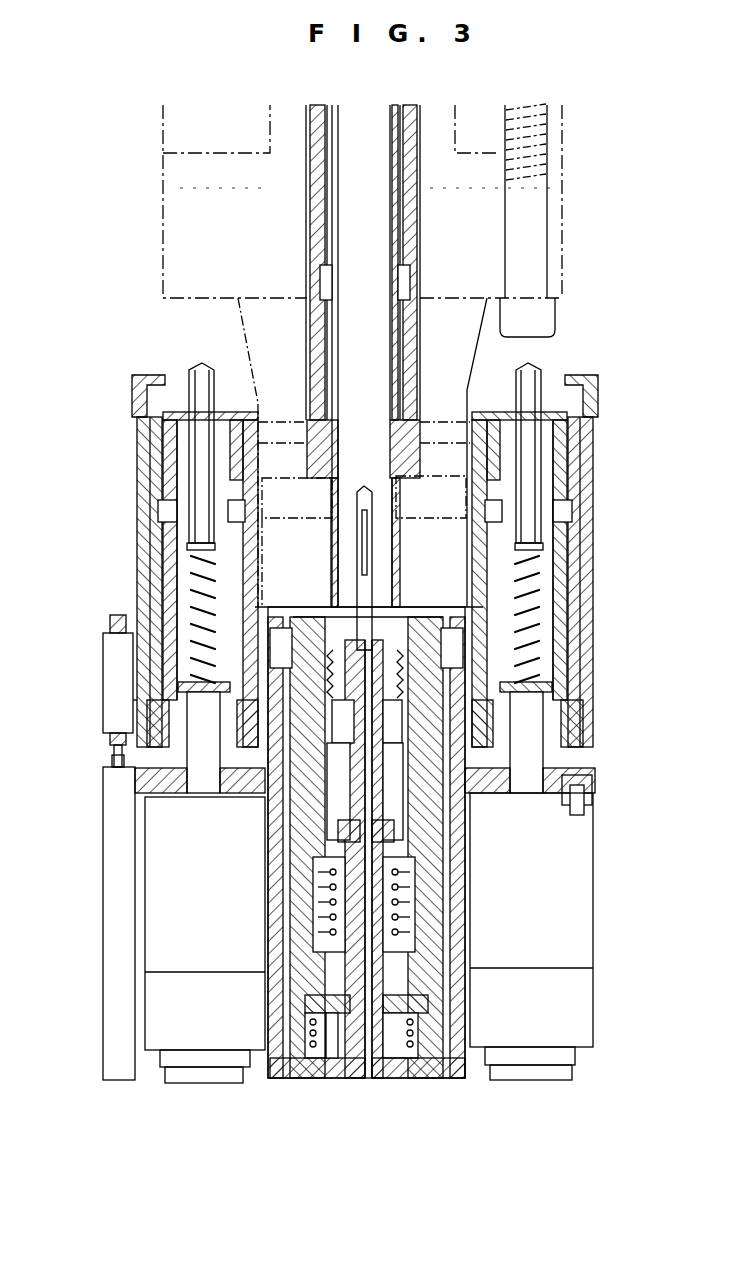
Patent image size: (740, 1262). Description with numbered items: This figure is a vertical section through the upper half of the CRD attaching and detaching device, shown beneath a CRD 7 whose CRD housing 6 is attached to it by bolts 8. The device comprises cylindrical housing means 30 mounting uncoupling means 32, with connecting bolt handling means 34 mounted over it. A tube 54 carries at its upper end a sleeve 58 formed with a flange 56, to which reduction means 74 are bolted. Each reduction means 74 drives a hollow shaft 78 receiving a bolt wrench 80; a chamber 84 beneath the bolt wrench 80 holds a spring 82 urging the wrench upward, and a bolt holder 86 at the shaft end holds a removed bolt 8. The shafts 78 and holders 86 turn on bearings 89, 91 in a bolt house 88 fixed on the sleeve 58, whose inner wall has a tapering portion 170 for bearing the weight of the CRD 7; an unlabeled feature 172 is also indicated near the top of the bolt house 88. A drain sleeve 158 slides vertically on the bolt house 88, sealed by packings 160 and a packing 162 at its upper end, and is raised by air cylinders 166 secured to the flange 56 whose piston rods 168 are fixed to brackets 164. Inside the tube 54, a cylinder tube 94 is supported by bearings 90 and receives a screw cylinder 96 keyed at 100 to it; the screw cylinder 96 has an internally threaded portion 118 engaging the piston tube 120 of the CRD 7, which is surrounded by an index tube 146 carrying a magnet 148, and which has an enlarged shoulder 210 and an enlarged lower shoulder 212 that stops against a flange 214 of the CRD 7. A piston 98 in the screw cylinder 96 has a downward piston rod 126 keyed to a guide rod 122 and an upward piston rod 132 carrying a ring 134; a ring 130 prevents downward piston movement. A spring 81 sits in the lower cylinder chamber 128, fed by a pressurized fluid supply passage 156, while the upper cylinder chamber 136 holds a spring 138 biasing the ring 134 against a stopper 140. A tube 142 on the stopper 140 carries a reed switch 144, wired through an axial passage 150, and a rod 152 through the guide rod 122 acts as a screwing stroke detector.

The CRD housing 6 is at (565, 125).
The CRD 7 is at (163, 205).
The bolt 8 is at (540, 213).
The housing means 30 is at (470, 950).
The uncoupling means 32 is at (468, 800).
The connecting bolt handling means 34 is at (192, 390).
The tube 54 is at (285, 922).
The flange 56 is at (590, 803).
The sleeve 58 is at (255, 795).
The reduction means 74 is at (580, 895).
The hollow shaft 78 is at (555, 660).
The bolt wrench 80 is at (542, 378).
The spring 81 is at (380, 1045).
The spring 82 is at (560, 582).
The chamber 84 is at (545, 668).
The bolt holder 86 is at (585, 500).
The bolt house 88 is at (585, 620).
The bearing 89 is at (140, 522).
The bearing 90 is at (268, 640).
The bearing 91 is at (137, 712).
The cylinder tube 94 is at (462, 756).
The screw cylinder 96 is at (415, 625).
The piston 98 is at (425, 975).
The key 100 is at (425, 635).
The internally threaded portion 118 is at (330, 640).
The piston tube 120 is at (330, 232).
The guide rod 122 is at (270, 1080).
The piston rod 126 is at (340, 1080).
The lower cylinder chamber 128 is at (390, 1020).
The ring 130 is at (330, 1010).
The piston rod 132 is at (330, 905).
The ring 134 is at (330, 862).
The upper cylinder chamber 136 is at (400, 920).
The spring 138 is at (405, 880).
The stopper 140 is at (378, 775).
The tube 142 is at (385, 620).
The reed switch 144 is at (366, 527).
The index tube 146 is at (307, 190).
The magnet 148 is at (410, 285).
The passage 150 is at (380, 800).
The rod 152 is at (275, 1040).
The pressurized fluid supply passage 156 is at (300, 1080).
The drain sleeve 158 is at (593, 440).
The packing 160 is at (590, 462).
The packing 162 is at (597, 378).
The bracket 164 is at (103, 660).
The air cylinder 166 is at (105, 840).
The piston rod 168 is at (112, 758).
The tapering portion 170 is at (243, 420).
The line 172 is at (242, 322).
The enlarged shoulder 210 is at (318, 400).
The enlarged lower shoulder 212 is at (297, 498).
The flange 214 is at (264, 521).